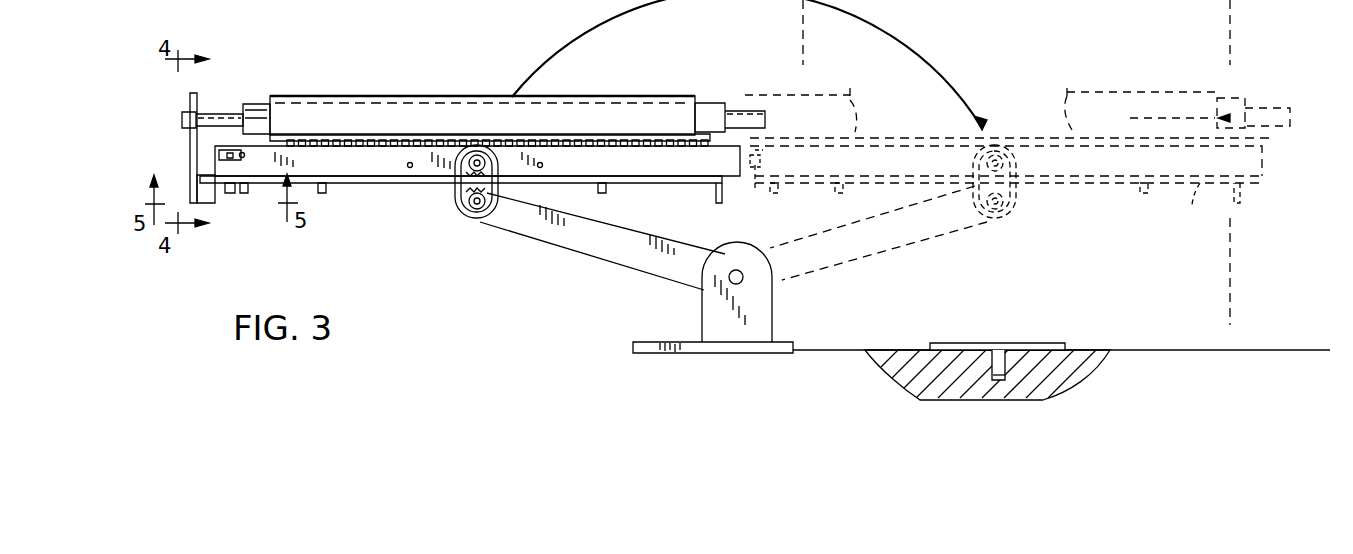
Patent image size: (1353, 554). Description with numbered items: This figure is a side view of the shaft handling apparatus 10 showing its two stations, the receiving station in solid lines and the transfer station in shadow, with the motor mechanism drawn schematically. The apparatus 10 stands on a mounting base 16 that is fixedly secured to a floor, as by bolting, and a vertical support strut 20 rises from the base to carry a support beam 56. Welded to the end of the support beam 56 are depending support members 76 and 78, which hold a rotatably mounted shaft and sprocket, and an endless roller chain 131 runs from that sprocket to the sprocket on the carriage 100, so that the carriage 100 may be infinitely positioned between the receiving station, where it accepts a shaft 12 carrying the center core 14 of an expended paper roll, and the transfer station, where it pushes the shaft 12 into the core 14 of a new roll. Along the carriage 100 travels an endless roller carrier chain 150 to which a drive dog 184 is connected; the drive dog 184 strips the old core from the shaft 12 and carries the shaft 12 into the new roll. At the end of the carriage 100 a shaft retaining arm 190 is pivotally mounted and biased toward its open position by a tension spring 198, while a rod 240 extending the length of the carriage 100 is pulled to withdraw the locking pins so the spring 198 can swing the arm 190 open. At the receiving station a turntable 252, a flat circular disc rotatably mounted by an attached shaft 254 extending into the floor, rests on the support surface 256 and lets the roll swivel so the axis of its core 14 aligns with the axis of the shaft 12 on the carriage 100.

The shaft handling apparatus 10 is at (487, 272).
The shaft 12 is at (255, 104).
The center core 14 is at (404, 96).
The mounting base 16 is at (650, 342).
The vertical support strut 20 is at (702, 306).
The support beam 56 is at (590, 242).
The depending support member 76 is at (360, 10).
The depending support member 78 is at (508, 11).
The carriage 100 is at (350, 197).
The endless roller chain 131 is at (468, 208).
The carrier chain 150 is at (318, 134).
The drive dog 184 is at (258, 135).
The shaft retaining arm 190 is at (190, 148).
The tension spring 198 is at (420, 0).
The rod 240 is at (400, 185).
The turntable 252 is at (1033, 355).
The shaft 254 is at (985, 367).
The support surface 256 is at (1018, 343).